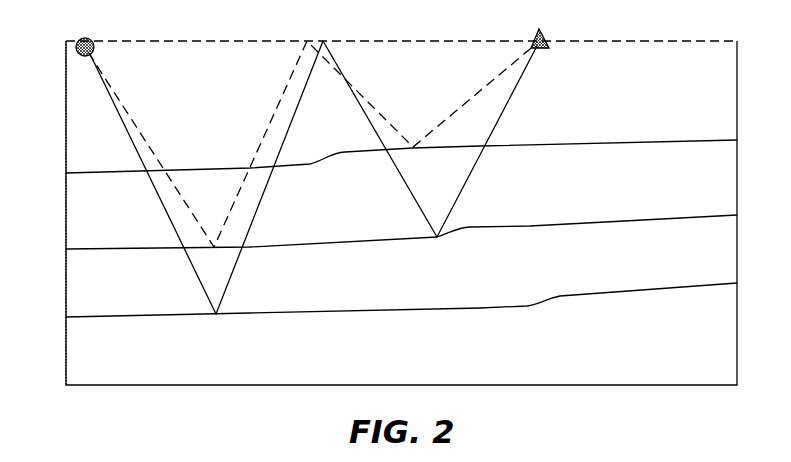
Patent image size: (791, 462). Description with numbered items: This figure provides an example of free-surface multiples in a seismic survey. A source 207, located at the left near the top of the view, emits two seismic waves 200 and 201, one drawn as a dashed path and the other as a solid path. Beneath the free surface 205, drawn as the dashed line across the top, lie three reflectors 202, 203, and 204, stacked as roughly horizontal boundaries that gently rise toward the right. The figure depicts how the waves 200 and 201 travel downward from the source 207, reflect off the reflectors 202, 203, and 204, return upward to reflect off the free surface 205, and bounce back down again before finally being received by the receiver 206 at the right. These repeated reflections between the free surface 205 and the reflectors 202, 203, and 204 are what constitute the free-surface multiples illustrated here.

The seismic wave 200 is at (134, 124).
The seismic wave 201 is at (129, 142).
The reflector 202 is at (585, 143).
The reflector 203 is at (585, 218).
The reflector 204 is at (585, 290).
The free surface 205 is at (239, 39).
The receiver 206 is at (545, 30).
The source 207 is at (77, 39).